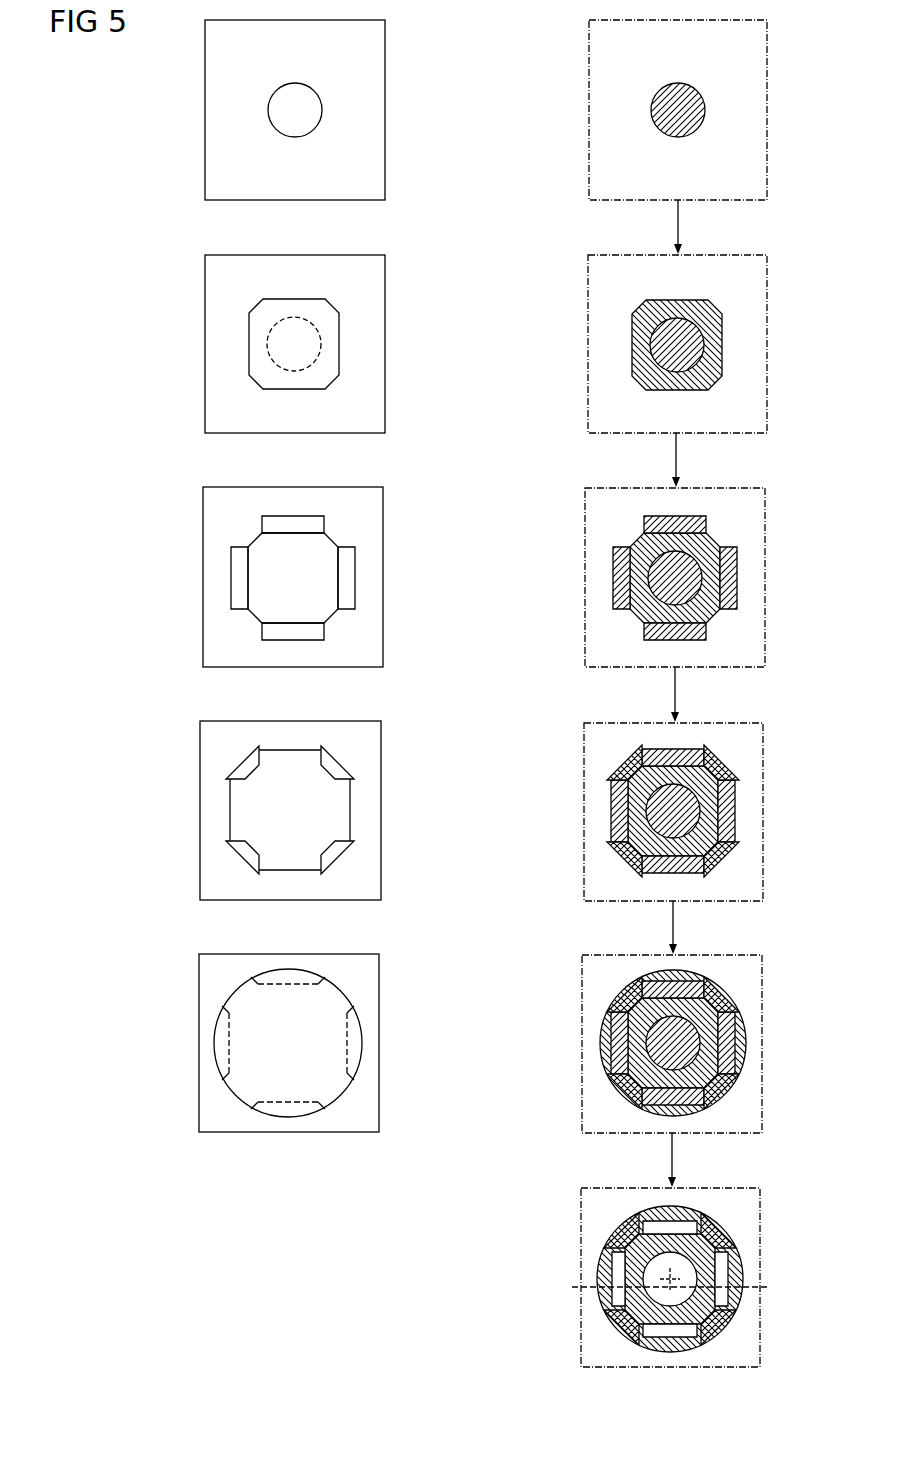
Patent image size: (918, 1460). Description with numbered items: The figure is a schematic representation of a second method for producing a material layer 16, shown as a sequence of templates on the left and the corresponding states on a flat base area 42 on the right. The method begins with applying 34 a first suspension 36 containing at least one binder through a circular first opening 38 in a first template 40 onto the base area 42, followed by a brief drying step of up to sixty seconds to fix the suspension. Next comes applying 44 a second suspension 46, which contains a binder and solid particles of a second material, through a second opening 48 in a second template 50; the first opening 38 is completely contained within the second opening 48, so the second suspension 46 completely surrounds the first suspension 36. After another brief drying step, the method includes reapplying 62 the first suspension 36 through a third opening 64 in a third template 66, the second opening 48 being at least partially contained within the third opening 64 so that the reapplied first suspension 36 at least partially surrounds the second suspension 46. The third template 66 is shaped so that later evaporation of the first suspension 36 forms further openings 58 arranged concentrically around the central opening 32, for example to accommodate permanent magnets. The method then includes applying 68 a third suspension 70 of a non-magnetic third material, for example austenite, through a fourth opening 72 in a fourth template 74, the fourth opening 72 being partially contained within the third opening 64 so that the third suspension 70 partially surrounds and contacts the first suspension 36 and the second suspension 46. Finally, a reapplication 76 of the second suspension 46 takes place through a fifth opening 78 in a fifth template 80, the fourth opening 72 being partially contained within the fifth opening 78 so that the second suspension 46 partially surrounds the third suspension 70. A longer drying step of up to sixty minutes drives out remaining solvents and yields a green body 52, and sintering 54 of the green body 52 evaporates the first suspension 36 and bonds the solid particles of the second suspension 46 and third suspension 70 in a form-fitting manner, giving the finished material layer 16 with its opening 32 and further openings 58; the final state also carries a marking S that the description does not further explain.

The material layer 16 is at (722, 1318).
The opening 32 is at (668, 1280).
The applying a first suspension 34 is at (771, 108).
The first suspension 36 is at (668, 108).
The first opening 38 is at (285, 108).
The first template 40 is at (232, 46).
The flat base area 42 is at (616, 46).
The applying a second suspension 44 is at (771, 305).
The second suspension 46 is at (718, 341).
The second opening 48 is at (326, 343).
The second template 50 is at (232, 277).
The green body 52 is at (600, 1066).
The sintering 54 is at (670, 1161).
The further openings 58 is at (615, 1263).
The reapplying the first suspension 62 is at (771, 529).
The third opening 64 is at (241, 579).
The third template 66 is at (231, 510).
The applying a third suspension 68 is at (769, 801).
The third suspension 70 is at (628, 760).
The fourth opening 72 is at (335, 762).
The fourth template 74 is at (232, 744).
The reapplication of the second suspension 76 is at (767, 977).
The fifth opening 78 is at (224, 1043).
The fifth template 80 is at (231, 977).
The sectional plane S is at (681, 1286).